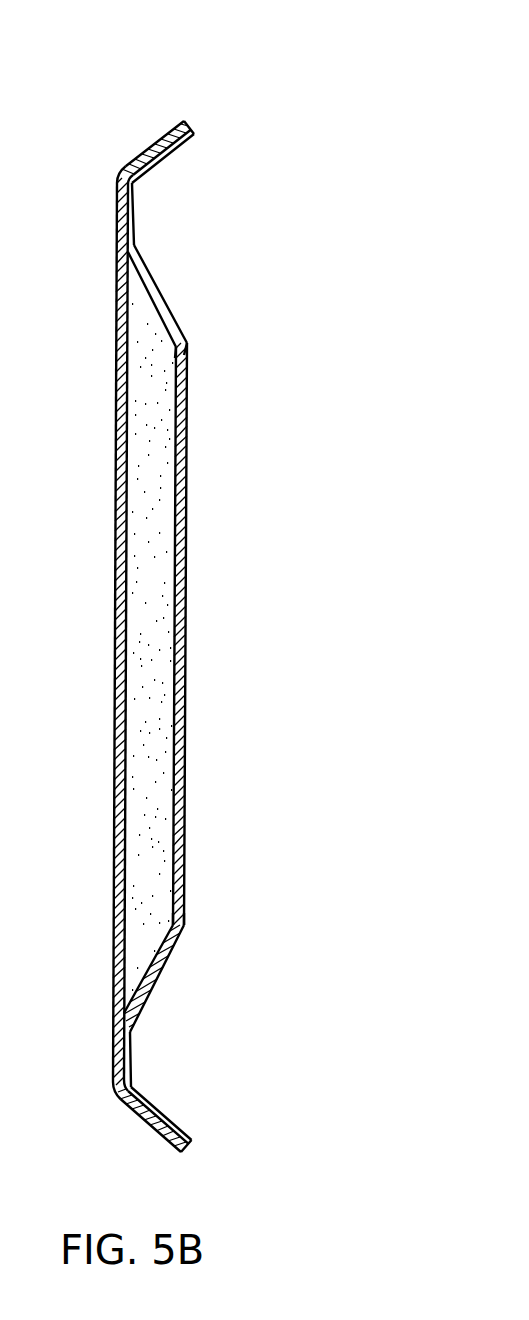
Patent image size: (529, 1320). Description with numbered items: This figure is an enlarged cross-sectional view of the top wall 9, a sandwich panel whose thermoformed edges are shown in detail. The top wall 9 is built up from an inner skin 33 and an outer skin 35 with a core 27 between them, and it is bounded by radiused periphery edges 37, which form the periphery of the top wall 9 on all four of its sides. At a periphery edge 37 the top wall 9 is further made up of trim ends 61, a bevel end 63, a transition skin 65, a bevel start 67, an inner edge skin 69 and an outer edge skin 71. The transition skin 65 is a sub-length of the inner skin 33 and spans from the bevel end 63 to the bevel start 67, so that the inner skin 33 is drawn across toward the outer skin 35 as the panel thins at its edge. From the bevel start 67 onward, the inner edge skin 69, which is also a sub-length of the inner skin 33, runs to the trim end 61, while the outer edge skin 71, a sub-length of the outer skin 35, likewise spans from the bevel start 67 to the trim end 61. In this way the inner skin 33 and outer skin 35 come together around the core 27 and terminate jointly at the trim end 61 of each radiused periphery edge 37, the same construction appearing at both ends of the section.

The top wall 9 is at (157, 472).
The core 27 is at (143, 538).
The inner skin 33 is at (187, 563).
The outer skin 35 is at (117, 655).
The radiused periphery edge 37 is at (155, 138).
The trim end 61 is at (190, 124).
The bevel end 63 is at (185, 340).
The transition skin 65 is at (160, 288).
The bevel start 67 is at (138, 243).
The inner edge skin 69 is at (153, 168).
The outer edge skin 71 is at (125, 163).